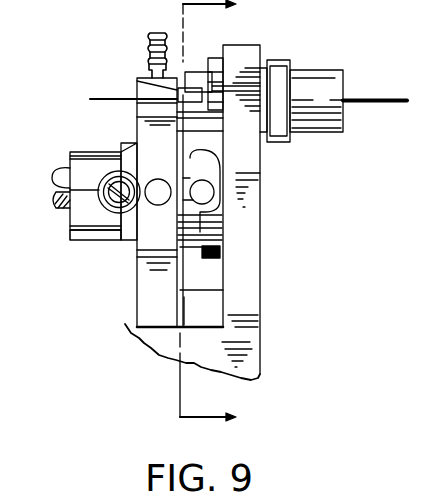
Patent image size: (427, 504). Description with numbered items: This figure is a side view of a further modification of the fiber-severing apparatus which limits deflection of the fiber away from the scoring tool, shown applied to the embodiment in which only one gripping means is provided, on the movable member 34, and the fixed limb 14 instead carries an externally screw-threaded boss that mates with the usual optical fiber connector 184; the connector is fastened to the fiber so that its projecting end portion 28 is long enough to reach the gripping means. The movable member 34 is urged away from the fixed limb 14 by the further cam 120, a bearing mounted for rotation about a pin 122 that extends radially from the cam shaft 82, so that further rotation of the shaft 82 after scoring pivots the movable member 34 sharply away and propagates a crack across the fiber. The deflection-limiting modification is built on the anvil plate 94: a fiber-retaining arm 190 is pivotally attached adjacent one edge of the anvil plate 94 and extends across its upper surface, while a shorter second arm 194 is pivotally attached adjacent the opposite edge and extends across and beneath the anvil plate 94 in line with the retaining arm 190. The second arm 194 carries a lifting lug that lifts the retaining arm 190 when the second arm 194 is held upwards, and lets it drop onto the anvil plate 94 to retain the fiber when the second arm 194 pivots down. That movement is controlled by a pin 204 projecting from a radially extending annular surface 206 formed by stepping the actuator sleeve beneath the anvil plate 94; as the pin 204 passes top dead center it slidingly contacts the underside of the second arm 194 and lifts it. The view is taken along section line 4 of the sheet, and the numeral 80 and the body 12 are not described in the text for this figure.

The section line 4- 4 is at (221, 216).
The housing body 12 is at (215, 357).
The fixed limb 14 is at (243, 214).
The projecting end portion 28 is at (96, 98).
The movable member 34 is at (150, 312).
The actuator block 80 is at (66, 153).
The cam shaft 82 is at (59, 172).
The anvil plate 94 is at (137, 79).
The further cam 120 is at (87, 232).
The pin 122 is at (117, 205).
The optical fiber connector 184 is at (330, 76).
The fiber-retaining arm 190 is at (203, 80).
The second arm 194 is at (137, 117).
The pin 204 is at (203, 139).
The radially extending annular surface 206 is at (205, 160).